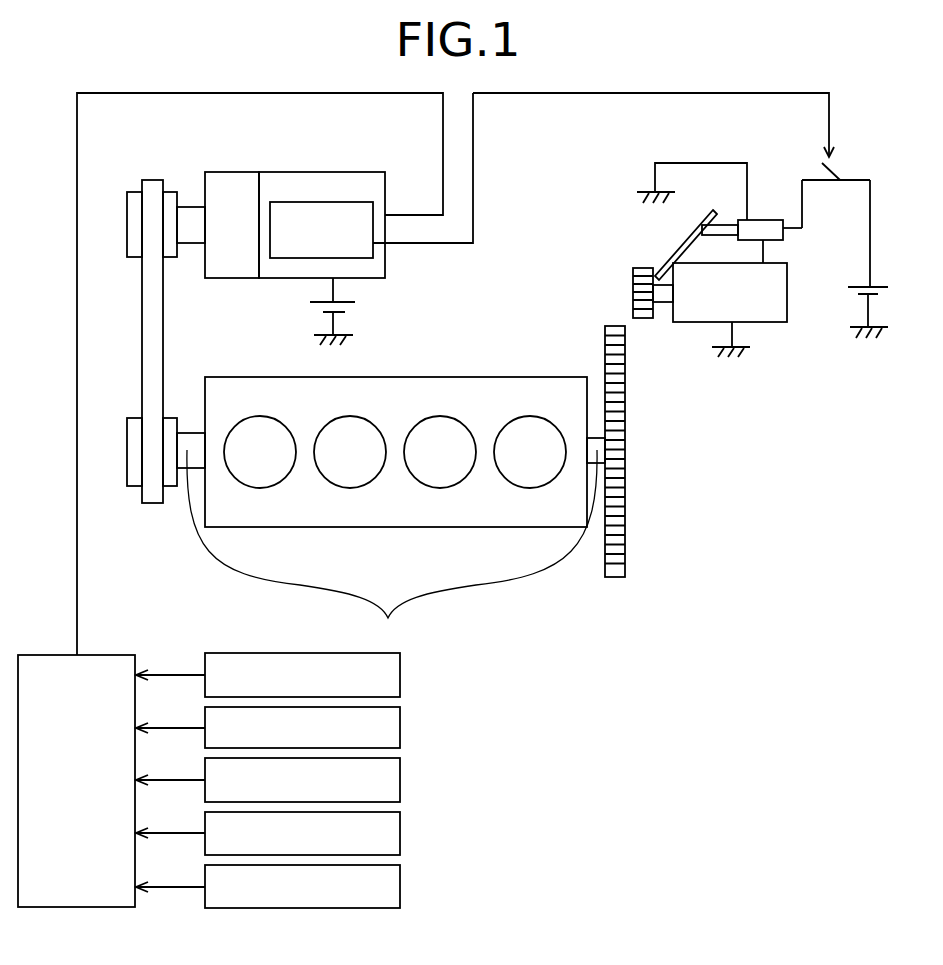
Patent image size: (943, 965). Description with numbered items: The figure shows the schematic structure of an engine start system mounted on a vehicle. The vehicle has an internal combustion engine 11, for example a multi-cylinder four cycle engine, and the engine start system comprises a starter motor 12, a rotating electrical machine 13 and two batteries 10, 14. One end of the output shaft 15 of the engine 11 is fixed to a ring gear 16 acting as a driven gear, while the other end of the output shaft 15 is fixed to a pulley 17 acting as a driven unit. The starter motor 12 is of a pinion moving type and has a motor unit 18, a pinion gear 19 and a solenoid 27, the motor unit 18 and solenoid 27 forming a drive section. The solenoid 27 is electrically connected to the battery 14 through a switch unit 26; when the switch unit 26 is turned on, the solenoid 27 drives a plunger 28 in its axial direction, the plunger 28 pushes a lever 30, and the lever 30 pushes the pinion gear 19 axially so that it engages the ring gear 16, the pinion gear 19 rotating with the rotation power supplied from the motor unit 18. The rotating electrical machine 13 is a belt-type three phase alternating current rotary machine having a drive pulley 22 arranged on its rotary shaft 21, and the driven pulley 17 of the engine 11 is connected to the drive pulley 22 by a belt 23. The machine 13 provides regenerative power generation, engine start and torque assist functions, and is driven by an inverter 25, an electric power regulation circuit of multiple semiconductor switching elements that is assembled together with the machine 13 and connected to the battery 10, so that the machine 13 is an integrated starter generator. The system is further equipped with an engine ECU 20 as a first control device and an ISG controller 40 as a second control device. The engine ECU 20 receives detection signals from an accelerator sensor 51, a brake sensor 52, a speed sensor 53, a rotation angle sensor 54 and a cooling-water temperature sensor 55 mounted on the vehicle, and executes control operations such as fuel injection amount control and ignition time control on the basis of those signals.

The battery 10 is at (345, 302).
The engine 11 is at (310, 527).
The starter motor 12 is at (735, 305).
The rotating electrical machine 13 is at (244, 172).
The battery 14 is at (850, 287).
The output shaft 15 is at (391, 544).
The ring gear 16 is at (627, 550).
The pulley 17 is at (126, 486).
The motor unit 18 is at (780, 322).
The pinion gear 19 is at (633, 292).
The engine ECU 20 is at (103, 907).
The rotary shaft 21 is at (195, 207).
The drive pulley 22 is at (124, 207).
The belt 23 is at (142, 382).
The inverter 25 is at (386, 186).
The switch unit 26 is at (828, 183).
The solenoid 27 is at (778, 241).
The plunger 28 is at (730, 222).
The lever 30 is at (685, 246).
The ISG controller 40 is at (284, 202).
The accelerator sensor 51 is at (402, 673).
The brake sensor 52 is at (402, 726).
The speed sensor 53 is at (402, 778).
The rotation angle sensor 54 is at (402, 831).
The cooling-water temperature sensor 55 is at (402, 884).